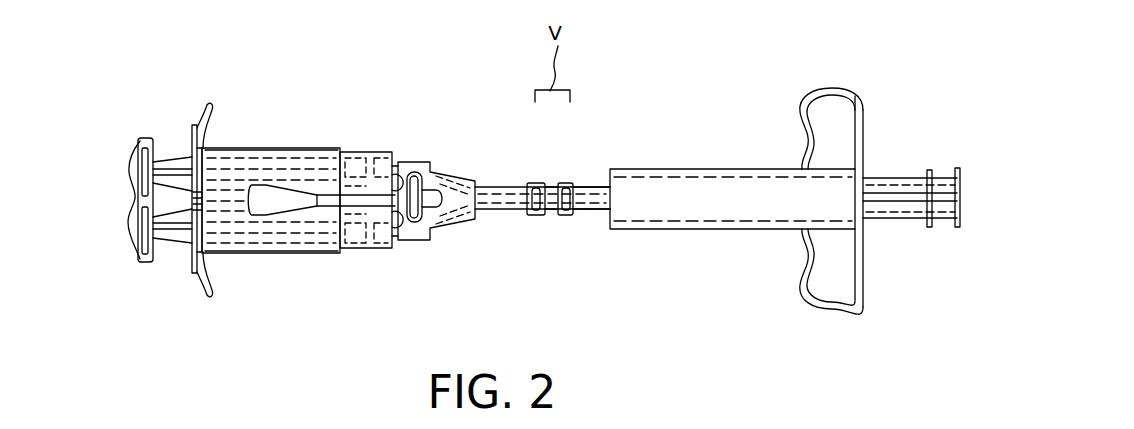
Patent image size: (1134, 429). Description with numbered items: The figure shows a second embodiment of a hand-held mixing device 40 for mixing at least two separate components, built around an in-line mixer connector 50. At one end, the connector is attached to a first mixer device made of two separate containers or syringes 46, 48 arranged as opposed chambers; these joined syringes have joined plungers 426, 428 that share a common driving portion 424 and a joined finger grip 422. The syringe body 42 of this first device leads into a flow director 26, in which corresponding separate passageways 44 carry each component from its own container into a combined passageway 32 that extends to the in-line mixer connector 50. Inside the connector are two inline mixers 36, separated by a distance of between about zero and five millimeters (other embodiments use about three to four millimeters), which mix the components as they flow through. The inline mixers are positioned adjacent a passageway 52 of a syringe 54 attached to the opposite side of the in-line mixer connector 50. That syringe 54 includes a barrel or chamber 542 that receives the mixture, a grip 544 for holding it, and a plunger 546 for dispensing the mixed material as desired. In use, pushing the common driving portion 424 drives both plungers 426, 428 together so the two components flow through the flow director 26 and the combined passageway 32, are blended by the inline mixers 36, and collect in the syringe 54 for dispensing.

The common driving portion 424 is at (131, 178).
The plunger 426 is at (177, 161).
The joined finger grip 422 is at (198, 121).
The plunger 428 is at (173, 243).
The syringe barrel 42 is at (313, 258).
The syringe 46 is at (317, 158).
The syringe 48 is at (320, 243).
The flow director 26 is at (446, 172).
The separate passageways 44 is at (453, 175).
The combined passageway 32 is at (483, 190).
The in-line mixer connector 50 is at (553, 181).
The inline mixers 36 is at (535, 216).
The passageway 52 is at (592, 185).
The mixing device 40 is at (549, 262).
The syringe 54 is at (696, 231).
The barrel or chamber 542 is at (745, 175).
The grip 544 is at (865, 123).
The plunger 546 is at (890, 219).